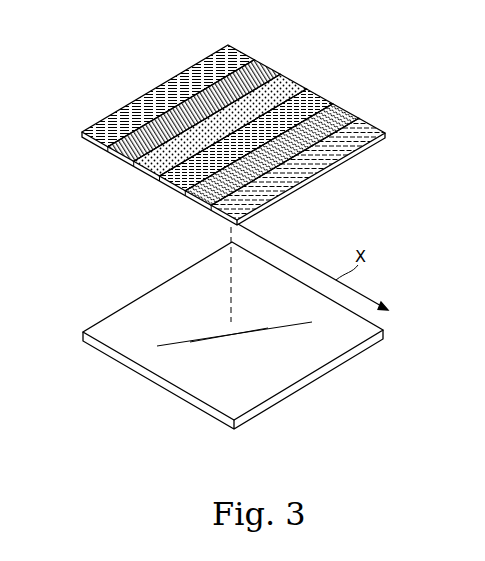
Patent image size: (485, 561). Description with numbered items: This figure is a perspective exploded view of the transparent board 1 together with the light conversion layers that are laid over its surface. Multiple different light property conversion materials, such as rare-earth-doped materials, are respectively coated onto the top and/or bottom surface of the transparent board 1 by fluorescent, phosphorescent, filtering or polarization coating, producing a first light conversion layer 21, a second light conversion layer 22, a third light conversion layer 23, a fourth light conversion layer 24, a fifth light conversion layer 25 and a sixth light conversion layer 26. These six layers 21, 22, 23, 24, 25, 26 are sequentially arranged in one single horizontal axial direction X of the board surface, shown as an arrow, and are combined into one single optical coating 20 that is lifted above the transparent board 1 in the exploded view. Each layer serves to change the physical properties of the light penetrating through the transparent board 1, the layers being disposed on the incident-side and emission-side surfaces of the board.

The transparent board 1 is at (307, 363).
The optical coating 20 is at (222, 132).
The first light conversion layer 21 is at (175, 90).
The second light conversion layer 22 is at (258, 73).
The third light conversion layer 23 is at (285, 87).
The fourth light conversion layer 24 is at (313, 103).
The fifth light conversion layer 25 is at (335, 122).
The sixth light conversion layer 26 is at (358, 132).